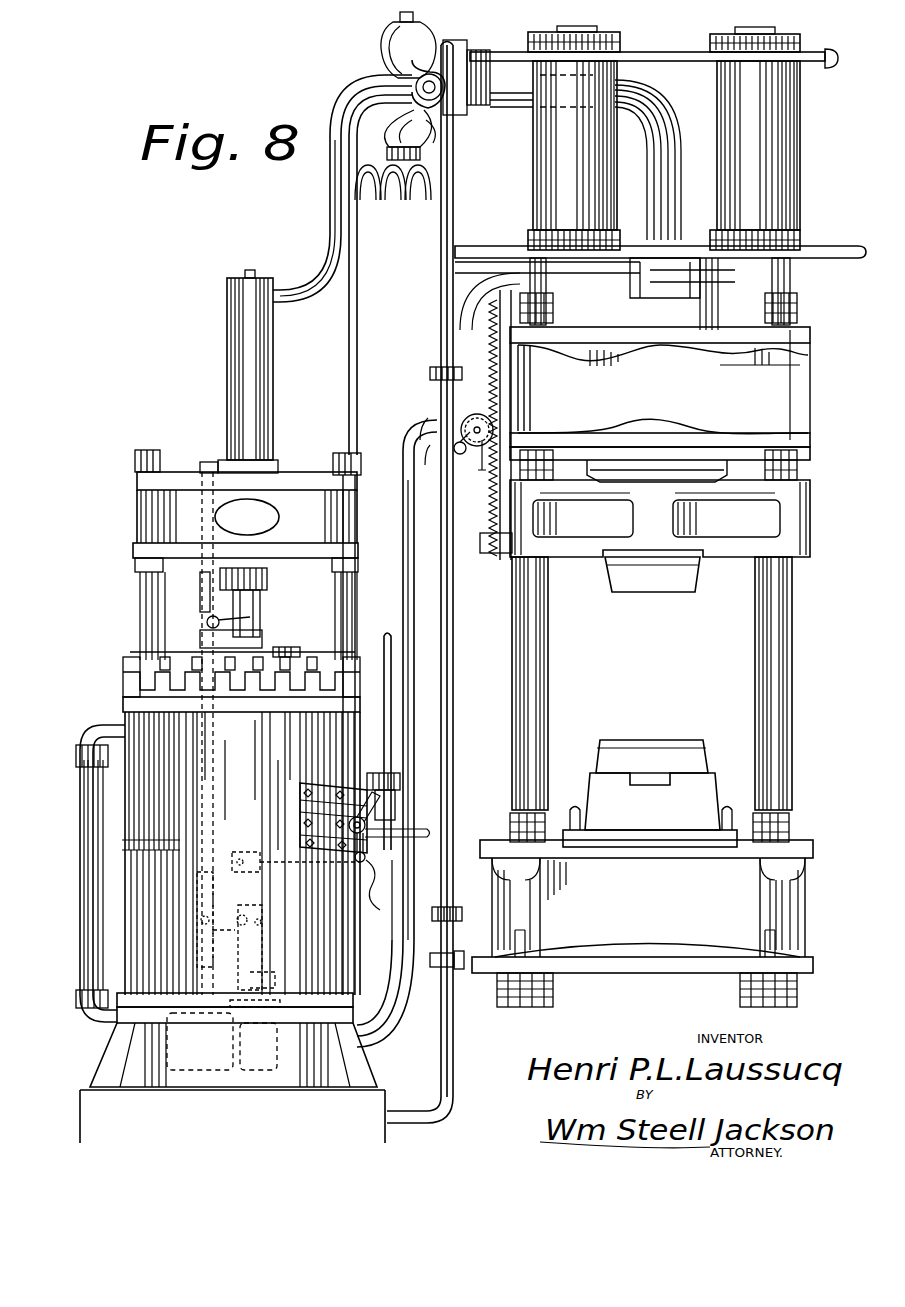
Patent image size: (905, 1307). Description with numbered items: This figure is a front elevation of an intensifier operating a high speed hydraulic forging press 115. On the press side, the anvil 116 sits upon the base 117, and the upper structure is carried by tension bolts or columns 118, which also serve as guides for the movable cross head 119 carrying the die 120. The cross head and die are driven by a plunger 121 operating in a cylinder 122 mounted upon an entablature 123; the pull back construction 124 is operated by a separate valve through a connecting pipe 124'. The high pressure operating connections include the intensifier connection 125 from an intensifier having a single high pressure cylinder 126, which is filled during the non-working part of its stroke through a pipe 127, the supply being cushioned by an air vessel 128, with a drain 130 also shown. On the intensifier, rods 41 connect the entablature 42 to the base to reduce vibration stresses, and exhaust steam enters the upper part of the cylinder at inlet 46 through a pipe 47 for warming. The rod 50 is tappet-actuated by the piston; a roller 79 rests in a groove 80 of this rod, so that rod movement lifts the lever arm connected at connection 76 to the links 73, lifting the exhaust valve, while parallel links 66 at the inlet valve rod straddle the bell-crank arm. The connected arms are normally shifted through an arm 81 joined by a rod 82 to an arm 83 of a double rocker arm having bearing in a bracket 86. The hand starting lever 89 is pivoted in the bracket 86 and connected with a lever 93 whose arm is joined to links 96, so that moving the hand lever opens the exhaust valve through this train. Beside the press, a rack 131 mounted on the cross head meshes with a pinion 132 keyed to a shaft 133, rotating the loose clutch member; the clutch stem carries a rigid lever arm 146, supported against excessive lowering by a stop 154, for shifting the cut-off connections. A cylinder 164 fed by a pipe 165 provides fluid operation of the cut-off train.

The rods 41 is at (135, 922).
The entablature 42 is at (180, 530).
The exhaust steam inlet 46 is at (123, 713).
The pipe 47 is at (92, 826).
The rod 50 is at (205, 586).
The parallel links 66 is at (249, 947).
The parallel links 73 is at (205, 808).
The connection 76 is at (203, 641).
The roller 79 is at (225, 617).
The groove 80 is at (207, 622).
The arm 81 is at (216, 919).
The rod 82 is at (270, 855).
The arm 83 is at (385, 953).
The bracket 86 is at (365, 822).
The hand starting lever 89 is at (388, 652).
The lever 93 is at (383, 885).
The links 96 is at (428, 692).
The hydraulic forging press 115 is at (819, 600).
The anvil 116 is at (680, 746).
The base 117 is at (642, 923).
The tension bolts or columns 118 is at (535, 668).
The movable cross head 119 is at (728, 560).
The die 120 is at (616, 582).
The plunger 121 is at (690, 486).
The cylinder 122 is at (650, 312).
The entablature 123 is at (792, 386).
The pull back construction 124 is at (663, 162).
The connecting pipe 124' is at (660, 276).
The intensifier connection 125 is at (336, 201).
The high pressure cylinder 126 is at (243, 357).
The pipe 127 is at (348, 290).
The air vessel 128 is at (400, 60).
The drain 130 is at (680, 62).
The rack 131 is at (492, 366).
The pinion 132 is at (475, 414).
The shaft 133 is at (481, 472).
The lever arm 146 is at (430, 454).
The stop 154 is at (461, 455).
The cylinder 164 is at (440, 426).
The pipe 165 is at (408, 514).